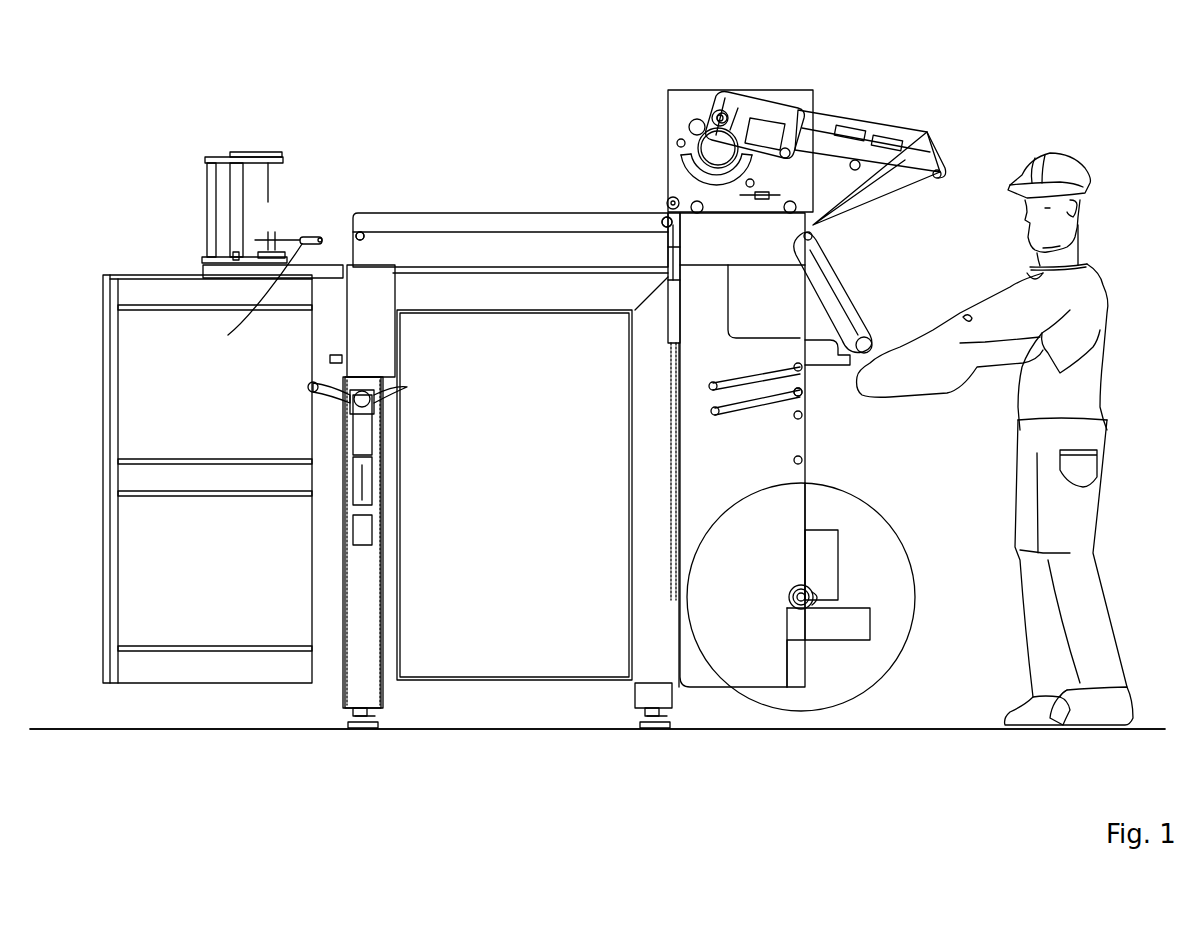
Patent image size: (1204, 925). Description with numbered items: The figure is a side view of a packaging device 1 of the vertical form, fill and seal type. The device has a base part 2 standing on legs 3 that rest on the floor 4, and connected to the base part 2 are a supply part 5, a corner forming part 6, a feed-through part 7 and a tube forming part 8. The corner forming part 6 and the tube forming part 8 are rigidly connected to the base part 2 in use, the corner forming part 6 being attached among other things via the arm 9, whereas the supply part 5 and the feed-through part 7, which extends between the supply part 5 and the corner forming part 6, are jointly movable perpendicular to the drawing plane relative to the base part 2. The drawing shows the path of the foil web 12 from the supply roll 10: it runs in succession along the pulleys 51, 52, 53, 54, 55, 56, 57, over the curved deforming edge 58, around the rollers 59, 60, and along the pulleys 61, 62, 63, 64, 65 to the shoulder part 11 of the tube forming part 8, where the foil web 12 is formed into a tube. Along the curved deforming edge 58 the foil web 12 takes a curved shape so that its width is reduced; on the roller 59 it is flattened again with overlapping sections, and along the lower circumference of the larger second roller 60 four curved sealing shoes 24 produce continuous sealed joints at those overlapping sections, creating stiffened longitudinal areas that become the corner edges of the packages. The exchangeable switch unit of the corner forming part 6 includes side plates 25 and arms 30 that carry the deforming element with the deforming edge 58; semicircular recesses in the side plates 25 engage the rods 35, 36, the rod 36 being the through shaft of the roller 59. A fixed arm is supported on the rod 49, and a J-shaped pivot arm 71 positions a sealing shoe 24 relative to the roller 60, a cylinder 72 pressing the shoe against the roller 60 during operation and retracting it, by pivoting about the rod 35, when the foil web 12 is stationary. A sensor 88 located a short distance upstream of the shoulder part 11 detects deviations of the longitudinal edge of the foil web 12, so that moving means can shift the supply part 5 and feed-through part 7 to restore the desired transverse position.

The packaging device 1 is at (1106, 92).
The base part 2 is at (503, 470).
The legs 3 is at (368, 730).
The floor 4 is at (548, 730).
The supply part 5 is at (710, 505).
The corner forming part 6 is at (640, 88).
The feed-through part 7 is at (535, 263).
The tube forming part 8 is at (222, 421).
The arm 9 is at (665, 280).
The supply roll 10 is at (815, 730).
The shoulder part 11 is at (318, 158).
The foil web 12 is at (495, 215).
The sealing shoes 24 is at (725, 170).
The side plates 25 is at (778, 100).
The arms 30 is at (848, 130).
The rod 35 is at (788, 156).
The rod 36 is at (724, 112).
The rod 49 is at (785, 215).
The pulley 51 is at (805, 460).
The pulley 52 is at (805, 416).
The pulley 53 is at (714, 410).
The pulley 54 is at (805, 392).
The pulley 55 is at (712, 383).
The pulley 56 is at (840, 360).
The pulley 57 is at (835, 235).
The curved deforming edge 58 is at (943, 168).
The roller 59 is at (716, 112).
The second roller 60 is at (733, 128).
The pulley 61 is at (690, 125).
The pulley 62 is at (677, 143).
The pulley 63 is at (668, 200).
The pulley 64 is at (362, 232).
The pulley 65 is at (322, 237).
The pivot arm 71 is at (818, 220).
The cylinder 72 is at (752, 190).
The sensor 88 is at (228, 335).